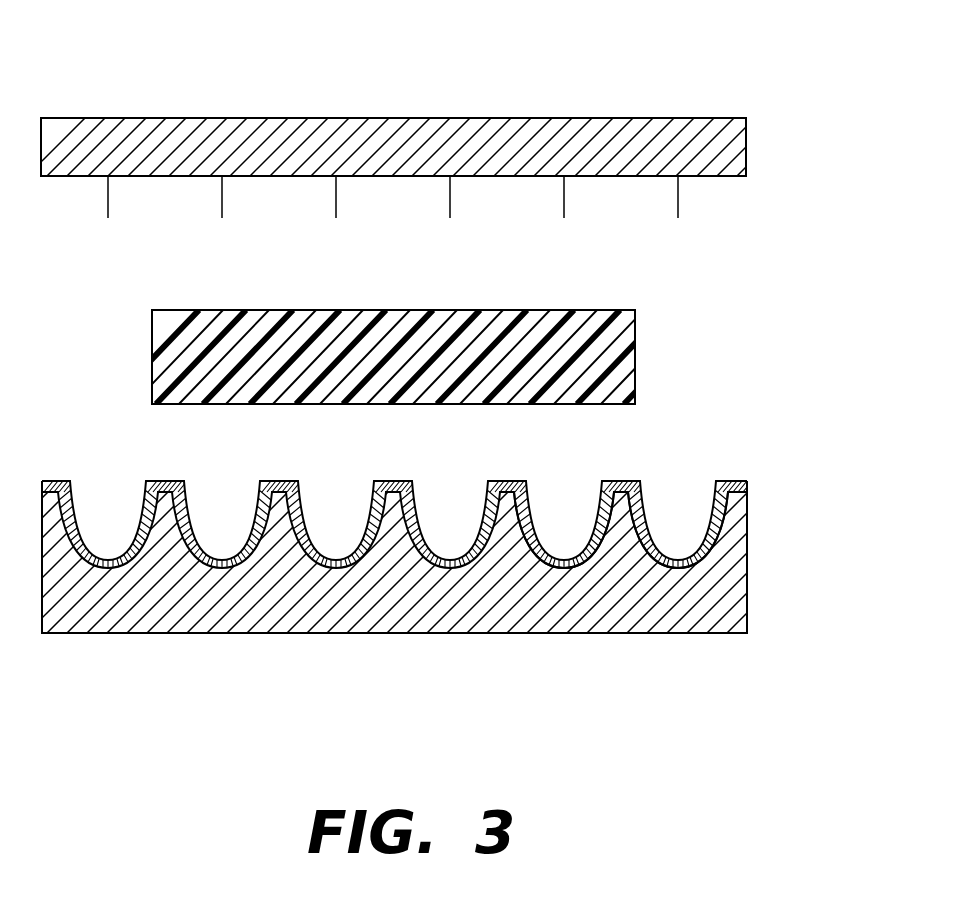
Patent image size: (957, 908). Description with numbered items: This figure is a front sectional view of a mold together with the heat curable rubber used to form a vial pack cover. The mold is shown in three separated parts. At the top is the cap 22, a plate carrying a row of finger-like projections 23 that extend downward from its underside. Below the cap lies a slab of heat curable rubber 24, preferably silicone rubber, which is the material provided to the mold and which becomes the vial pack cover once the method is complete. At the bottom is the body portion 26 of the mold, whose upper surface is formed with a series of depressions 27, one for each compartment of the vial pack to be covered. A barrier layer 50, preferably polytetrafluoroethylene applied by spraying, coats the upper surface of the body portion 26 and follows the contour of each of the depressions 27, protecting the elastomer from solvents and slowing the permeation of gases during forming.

The cap 22 is at (105, 131).
The finger-like projections 23 is at (683, 192).
The heat curable rubber 24 is at (635, 354).
The body portion 26 is at (718, 595).
The depressions 27 is at (563, 567).
The barrier layer 50 is at (110, 557).